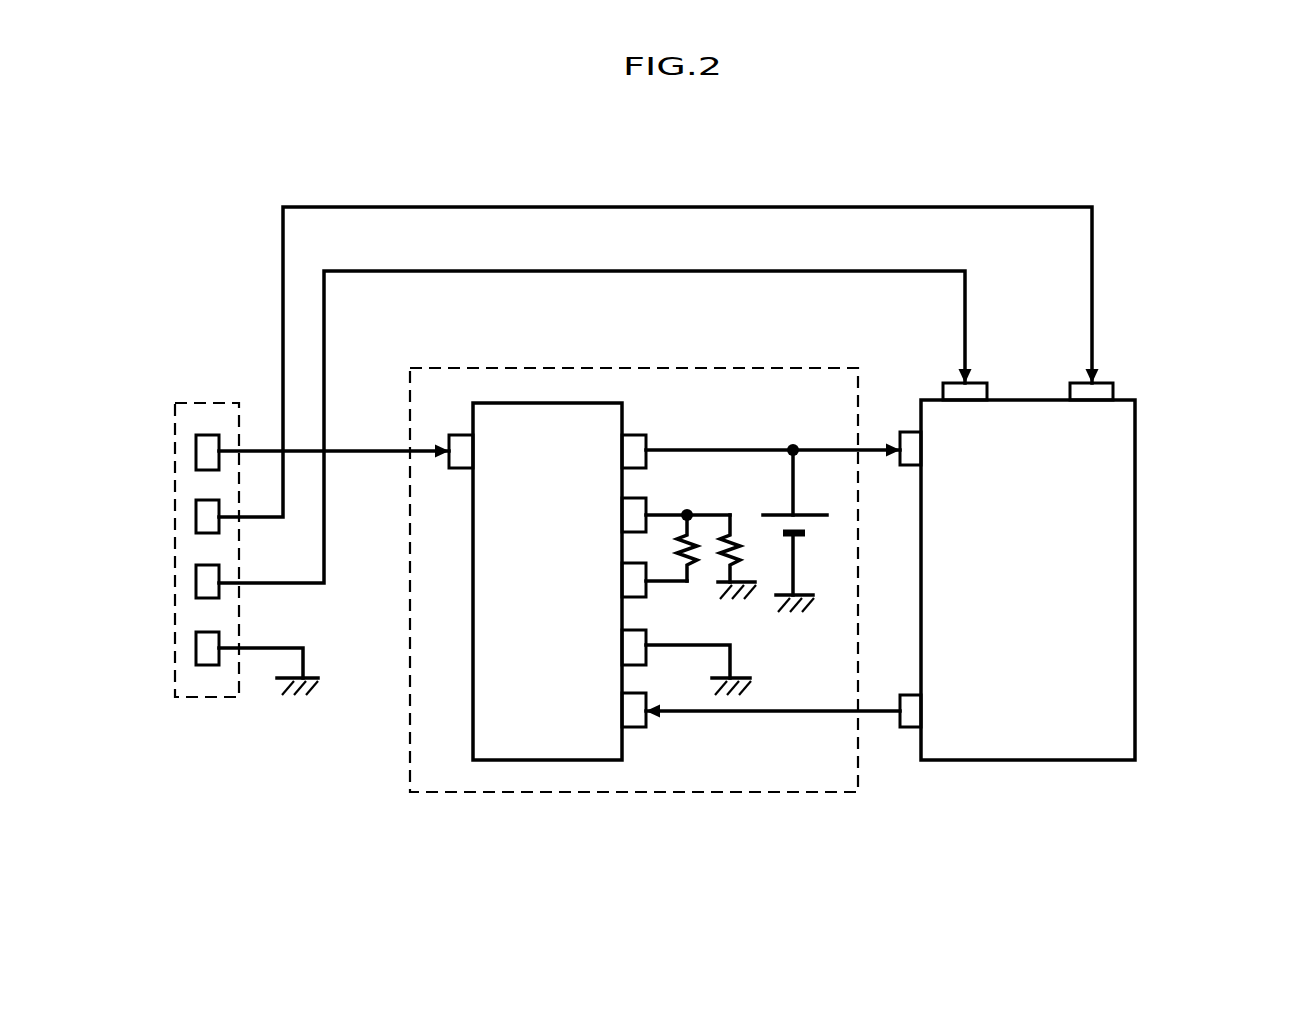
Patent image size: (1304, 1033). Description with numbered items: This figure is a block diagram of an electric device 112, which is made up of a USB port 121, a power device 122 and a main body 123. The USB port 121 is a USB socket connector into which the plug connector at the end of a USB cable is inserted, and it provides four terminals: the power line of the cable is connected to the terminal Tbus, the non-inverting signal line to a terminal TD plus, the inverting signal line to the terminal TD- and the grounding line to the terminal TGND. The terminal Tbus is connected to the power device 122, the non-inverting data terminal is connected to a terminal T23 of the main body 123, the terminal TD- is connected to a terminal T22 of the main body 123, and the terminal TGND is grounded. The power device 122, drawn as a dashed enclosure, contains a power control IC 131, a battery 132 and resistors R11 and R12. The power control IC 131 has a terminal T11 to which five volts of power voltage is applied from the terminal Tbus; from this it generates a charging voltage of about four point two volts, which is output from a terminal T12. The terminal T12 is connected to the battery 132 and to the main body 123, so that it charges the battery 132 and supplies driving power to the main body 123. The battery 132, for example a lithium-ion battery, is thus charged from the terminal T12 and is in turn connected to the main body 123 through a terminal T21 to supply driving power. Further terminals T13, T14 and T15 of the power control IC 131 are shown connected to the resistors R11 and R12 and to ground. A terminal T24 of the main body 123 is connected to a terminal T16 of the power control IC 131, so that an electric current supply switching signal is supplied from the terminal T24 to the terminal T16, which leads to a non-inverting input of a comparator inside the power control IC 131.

The electric device 112 is at (342, 150).
The USB port 121 is at (193, 400).
The power device 122 is at (557, 369).
The power control IC 131 is at (600, 403).
The battery 132 is at (813, 513).
The main body 123 is at (1135, 398).
The terminal Tbus is at (197, 437).
The terminal TD- is at (195, 598).
The terminal TGND is at (195, 665).
The terminal T11 is at (455, 435).
The terminal T12 is at (647, 432).
The terminal T13 is at (645, 495).
The terminal T14 is at (635, 597).
The terminal T15 is at (647, 665).
The terminal T16 is at (643, 727).
The terminal T21 is at (902, 432).
The terminal T22 is at (985, 383).
The terminal T23 is at (1112, 383).
The terminal T24 is at (902, 727).
The resistor R11 is at (692, 535).
The resistor R12 is at (720, 560).